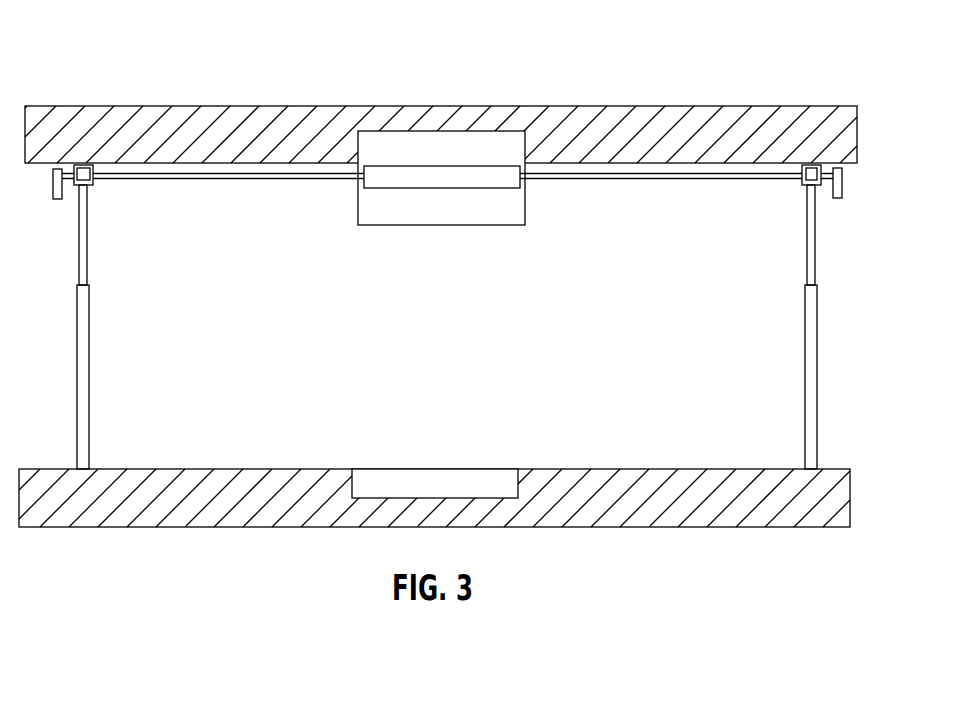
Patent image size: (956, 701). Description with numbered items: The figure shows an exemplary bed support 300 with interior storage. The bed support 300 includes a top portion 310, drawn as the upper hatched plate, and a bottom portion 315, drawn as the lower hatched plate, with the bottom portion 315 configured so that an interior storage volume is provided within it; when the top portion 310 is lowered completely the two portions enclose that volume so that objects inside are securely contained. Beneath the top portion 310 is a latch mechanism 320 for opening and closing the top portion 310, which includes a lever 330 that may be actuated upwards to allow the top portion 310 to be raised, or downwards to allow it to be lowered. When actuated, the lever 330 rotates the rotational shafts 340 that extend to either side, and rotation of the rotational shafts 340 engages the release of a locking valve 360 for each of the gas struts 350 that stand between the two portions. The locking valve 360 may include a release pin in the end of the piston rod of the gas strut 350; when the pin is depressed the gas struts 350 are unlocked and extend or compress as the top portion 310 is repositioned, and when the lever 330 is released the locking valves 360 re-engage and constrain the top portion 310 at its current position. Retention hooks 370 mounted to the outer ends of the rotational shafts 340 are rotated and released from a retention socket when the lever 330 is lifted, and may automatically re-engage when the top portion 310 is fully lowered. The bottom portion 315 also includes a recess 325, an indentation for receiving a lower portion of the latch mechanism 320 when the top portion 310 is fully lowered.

The bed support 300 is at (103, 38).
The top portion 310 is at (528, 106).
The bottom portion 315 is at (572, 469).
The latch mechanism 320 is at (520, 225).
The recess 325 is at (422, 469).
The lever 330 is at (440, 188).
The rotational shaft 340 is at (262, 180).
The gas strut 350 is at (87, 370).
The locking valve 360 is at (93, 185).
The retention hook 370 is at (57, 200).